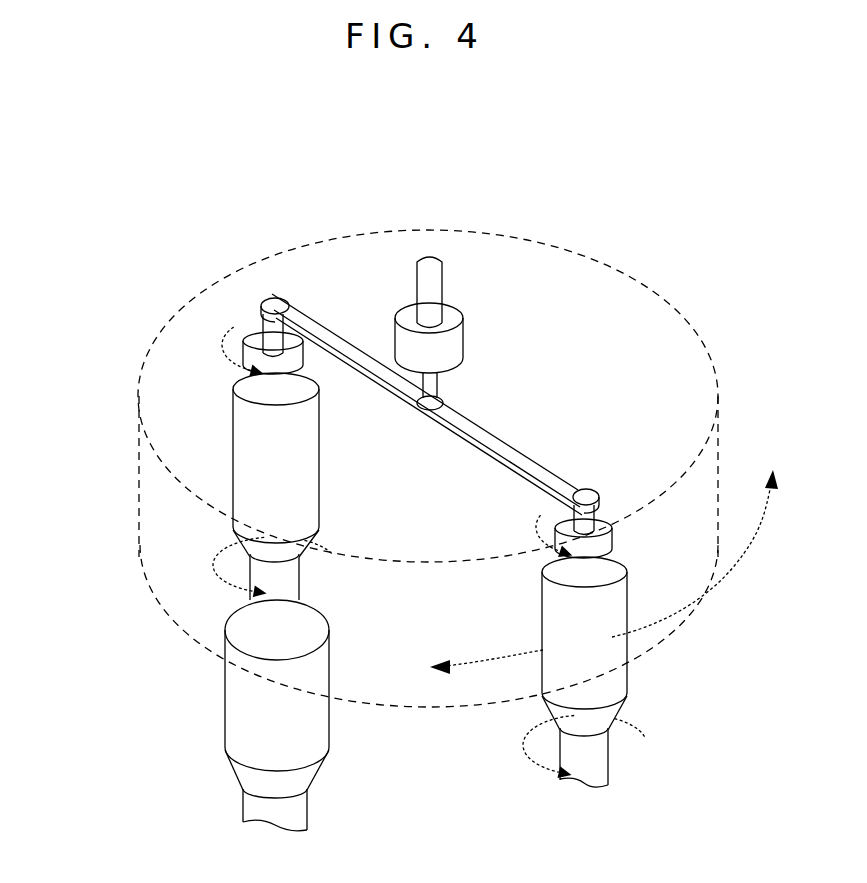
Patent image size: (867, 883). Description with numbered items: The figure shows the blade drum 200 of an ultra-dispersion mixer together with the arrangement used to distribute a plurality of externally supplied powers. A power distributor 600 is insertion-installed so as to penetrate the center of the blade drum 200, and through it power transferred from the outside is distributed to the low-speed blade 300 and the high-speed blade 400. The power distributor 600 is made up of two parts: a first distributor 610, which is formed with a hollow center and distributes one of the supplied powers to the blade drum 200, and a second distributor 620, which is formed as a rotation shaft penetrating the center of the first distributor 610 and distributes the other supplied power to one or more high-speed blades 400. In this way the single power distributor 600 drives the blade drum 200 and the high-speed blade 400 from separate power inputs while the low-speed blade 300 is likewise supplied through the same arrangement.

The blade drum 200 is at (540, 280).
The low-speed blade 300 is at (243, 717).
The high-speed blade 400 is at (262, 457).
The power distributor 600 is at (443, 222).
The first distributor 610 is at (465, 353).
The second distributor 620 is at (260, 304).